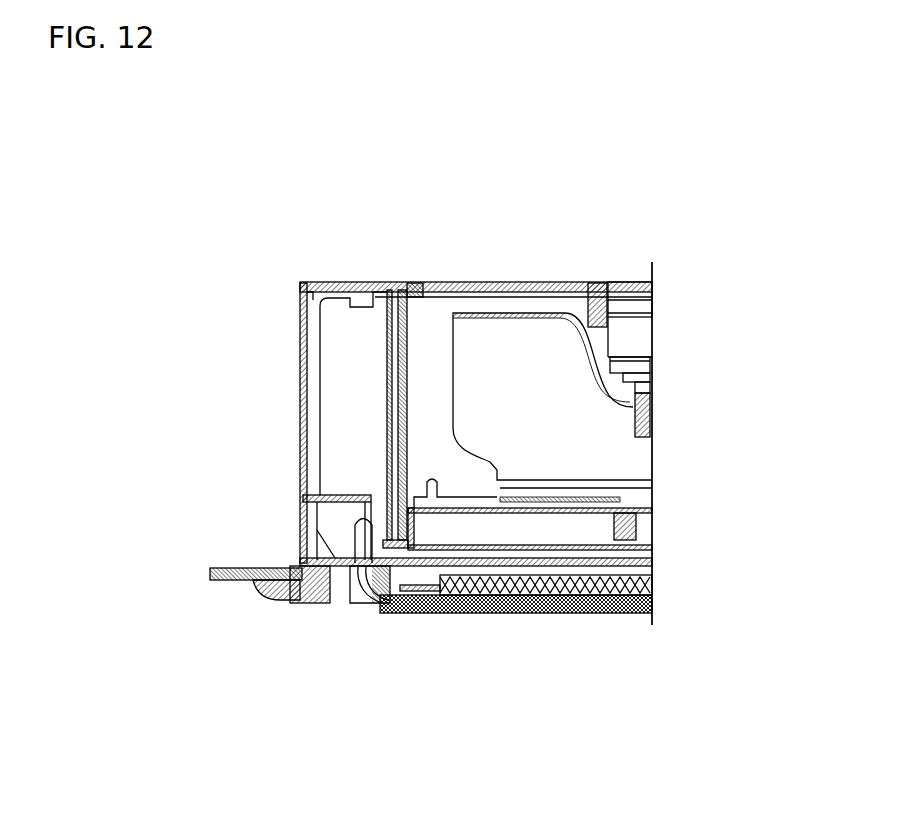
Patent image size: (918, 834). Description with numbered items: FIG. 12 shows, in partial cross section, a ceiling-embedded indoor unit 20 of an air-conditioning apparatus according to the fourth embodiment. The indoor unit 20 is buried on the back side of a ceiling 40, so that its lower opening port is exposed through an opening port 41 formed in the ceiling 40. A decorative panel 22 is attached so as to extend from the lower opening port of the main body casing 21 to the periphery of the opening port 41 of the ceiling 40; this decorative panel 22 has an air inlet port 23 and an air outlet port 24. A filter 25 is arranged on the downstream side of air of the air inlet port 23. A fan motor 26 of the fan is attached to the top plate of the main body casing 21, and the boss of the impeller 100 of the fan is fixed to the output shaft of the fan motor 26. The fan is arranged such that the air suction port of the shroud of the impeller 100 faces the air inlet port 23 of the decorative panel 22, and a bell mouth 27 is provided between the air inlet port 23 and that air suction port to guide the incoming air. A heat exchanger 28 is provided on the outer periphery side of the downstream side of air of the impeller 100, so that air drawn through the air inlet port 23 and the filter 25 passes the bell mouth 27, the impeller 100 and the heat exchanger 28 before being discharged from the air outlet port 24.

The ceiling-embedded indoor unit 20 is at (272, 300).
The main body casing 21 is at (303, 413).
The decorative panel 22 is at (278, 598).
The air inlet port 23 is at (523, 620).
The air outlet port 24 is at (322, 610).
The filter 25 is at (593, 616).
The fan motor 26 is at (637, 342).
The bell mouth 27 is at (633, 498).
The heat exchanger 28 is at (395, 284).
The ceiling 40 is at (212, 568).
The opening port 41 is at (296, 563).
The impeller 100 is at (662, 455).